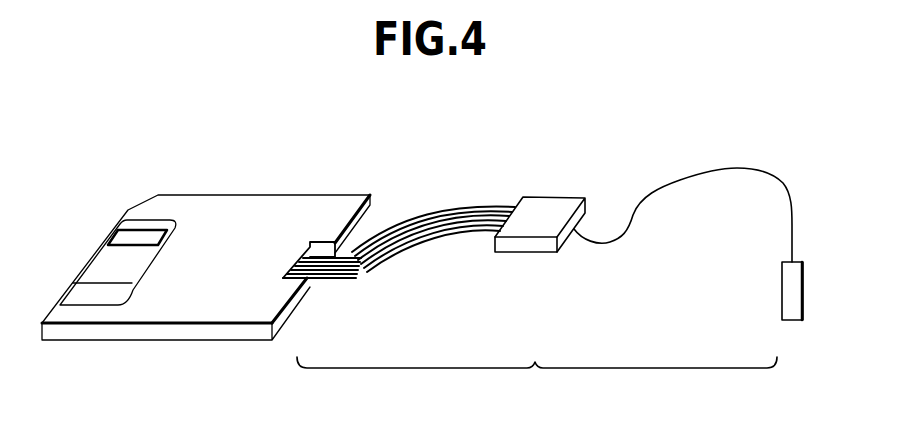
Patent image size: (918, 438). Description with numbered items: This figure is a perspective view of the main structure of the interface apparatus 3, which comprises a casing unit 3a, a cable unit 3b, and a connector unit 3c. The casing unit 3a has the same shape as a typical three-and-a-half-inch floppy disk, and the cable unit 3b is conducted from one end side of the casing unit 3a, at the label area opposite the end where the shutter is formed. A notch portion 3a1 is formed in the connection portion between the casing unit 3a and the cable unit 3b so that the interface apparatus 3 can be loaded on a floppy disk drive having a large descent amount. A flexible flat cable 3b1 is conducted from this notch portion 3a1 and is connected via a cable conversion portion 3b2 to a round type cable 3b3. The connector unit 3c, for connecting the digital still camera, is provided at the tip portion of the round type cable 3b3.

The interface apparatus 3 is at (591, 153).
The casing unit 3a is at (285, 197).
The notch portion 3a1 is at (313, 283).
The cable unit 3b is at (537, 383).
The flexible flat cable 3b1 is at (462, 209).
The cable conversion portion 3b2 is at (535, 253).
The round type cable 3b3 is at (737, 167).
The connector unit 3c is at (782, 293).